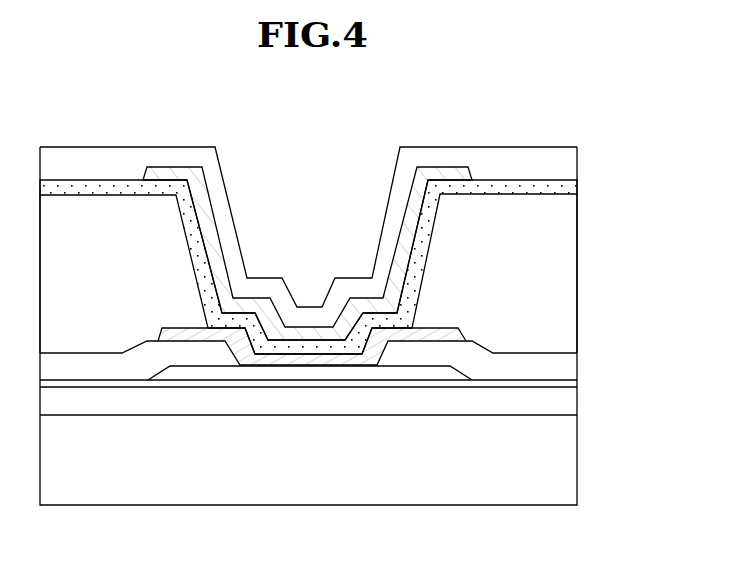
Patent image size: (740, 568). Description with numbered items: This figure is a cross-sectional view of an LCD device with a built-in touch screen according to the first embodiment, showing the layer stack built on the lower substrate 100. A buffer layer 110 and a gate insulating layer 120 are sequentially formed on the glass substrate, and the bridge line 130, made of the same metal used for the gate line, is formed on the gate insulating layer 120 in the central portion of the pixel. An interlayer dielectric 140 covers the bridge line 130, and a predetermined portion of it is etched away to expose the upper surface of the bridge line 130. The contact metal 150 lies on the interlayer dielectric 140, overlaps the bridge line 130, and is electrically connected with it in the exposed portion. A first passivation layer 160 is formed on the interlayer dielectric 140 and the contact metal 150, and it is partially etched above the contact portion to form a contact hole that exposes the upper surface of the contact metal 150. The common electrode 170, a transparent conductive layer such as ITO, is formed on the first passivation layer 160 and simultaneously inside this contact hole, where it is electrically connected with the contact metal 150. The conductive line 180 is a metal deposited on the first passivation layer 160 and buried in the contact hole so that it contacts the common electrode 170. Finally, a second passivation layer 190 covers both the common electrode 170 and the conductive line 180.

The lower substrate 100 is at (327, 122).
The buffer layer 110 is at (572, 407).
The gate insulating layer 120 is at (572, 384).
The bridge line 130 is at (468, 370).
The interlayer dielectric 140 is at (572, 361).
The contact metal 150 is at (438, 327).
The first passivation layer 160 is at (572, 269).
The common electrode 170 is at (572, 189).
The conductive line 180 is at (471, 179).
The second passivation layer 190 is at (572, 164).